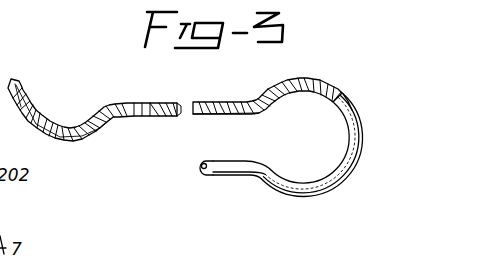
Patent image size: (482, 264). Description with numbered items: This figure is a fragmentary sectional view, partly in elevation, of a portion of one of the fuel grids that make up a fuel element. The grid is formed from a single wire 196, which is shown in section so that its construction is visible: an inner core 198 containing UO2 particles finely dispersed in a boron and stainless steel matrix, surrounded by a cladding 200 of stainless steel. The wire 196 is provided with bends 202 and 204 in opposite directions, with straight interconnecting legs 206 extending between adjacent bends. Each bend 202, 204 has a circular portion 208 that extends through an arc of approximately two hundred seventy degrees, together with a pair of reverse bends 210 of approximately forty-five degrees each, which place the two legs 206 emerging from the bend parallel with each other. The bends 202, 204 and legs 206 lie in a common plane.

The wire 196 is at (246, 74).
The core 198 is at (201, 173).
The cladding 200 is at (159, 103).
The bend 202 is at (317, 83).
The bend 204 is at (30, 117).
The leg 206 is at (228, 147).
The circular portion 208 is at (344, 121).
The reverse bend 210 is at (250, 173).